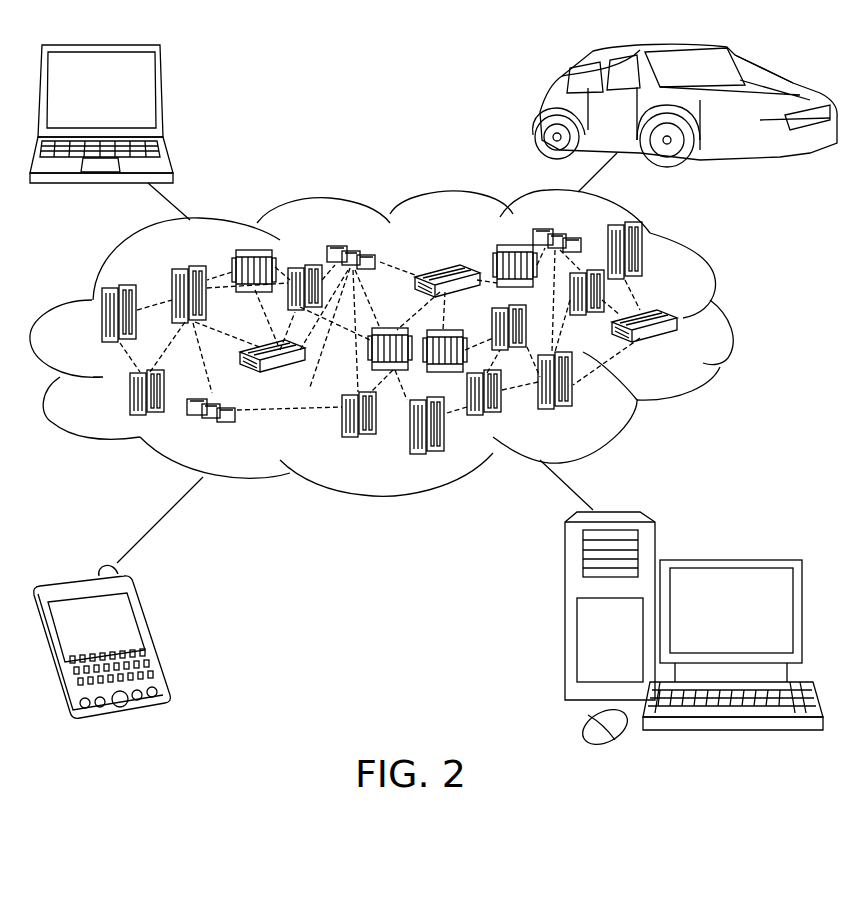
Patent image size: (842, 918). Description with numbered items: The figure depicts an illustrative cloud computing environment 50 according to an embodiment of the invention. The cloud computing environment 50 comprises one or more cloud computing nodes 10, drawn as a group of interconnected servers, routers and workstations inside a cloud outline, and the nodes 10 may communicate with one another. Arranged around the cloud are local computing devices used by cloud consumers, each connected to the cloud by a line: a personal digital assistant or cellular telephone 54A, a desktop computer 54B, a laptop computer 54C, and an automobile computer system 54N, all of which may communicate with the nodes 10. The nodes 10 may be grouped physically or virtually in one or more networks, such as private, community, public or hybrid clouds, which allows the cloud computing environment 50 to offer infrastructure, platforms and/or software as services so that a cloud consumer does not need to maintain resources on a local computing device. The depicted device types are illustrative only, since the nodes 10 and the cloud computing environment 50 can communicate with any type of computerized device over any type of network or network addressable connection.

The cloud computing nodes 10 is at (676, 346).
The cloud computing environment 50 is at (727, 320).
The personal digital assistant or cellular telephone 54A is at (153, 635).
The desktop computer 54B is at (730, 558).
The laptop computer 54C is at (158, 99).
The automobile computer system 54N is at (540, 110).